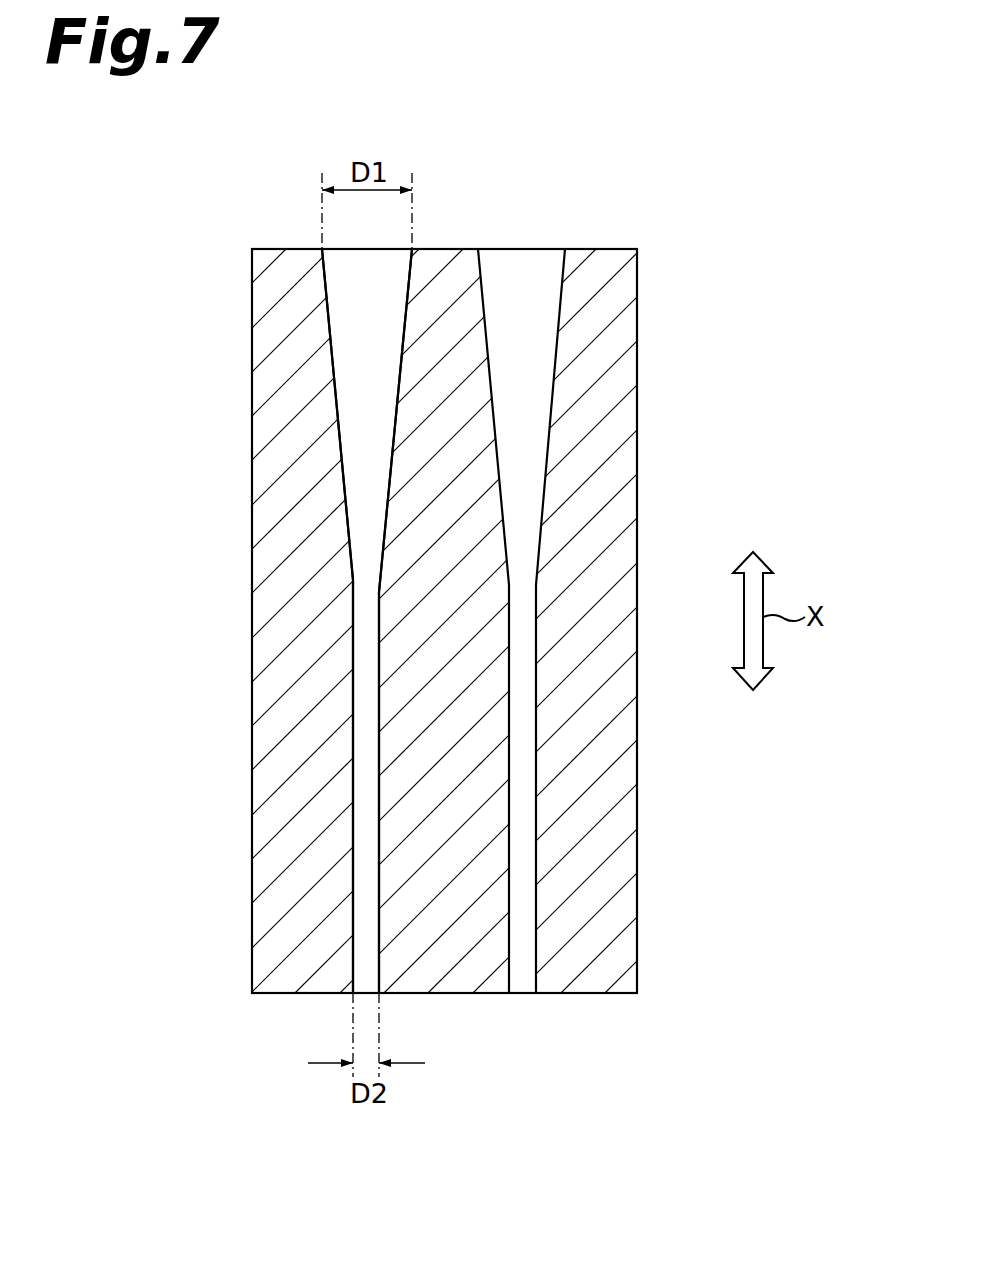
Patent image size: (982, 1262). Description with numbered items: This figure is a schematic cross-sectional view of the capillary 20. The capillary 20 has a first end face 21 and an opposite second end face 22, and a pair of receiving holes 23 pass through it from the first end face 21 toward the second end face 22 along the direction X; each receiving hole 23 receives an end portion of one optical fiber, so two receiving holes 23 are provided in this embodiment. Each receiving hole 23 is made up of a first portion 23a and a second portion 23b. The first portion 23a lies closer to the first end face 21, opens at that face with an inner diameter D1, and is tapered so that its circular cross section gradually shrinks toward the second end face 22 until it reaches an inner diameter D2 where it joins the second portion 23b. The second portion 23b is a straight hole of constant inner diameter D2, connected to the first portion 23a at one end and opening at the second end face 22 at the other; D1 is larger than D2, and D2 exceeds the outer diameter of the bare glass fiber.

The capillary 20 is at (246, 250).
The first end face 21 is at (607, 249).
The second end face 22 is at (598, 993).
The receiving hole 23 is at (160, 392).
The first portion 23a is at (330, 412).
The second portion 23b is at (345, 668).